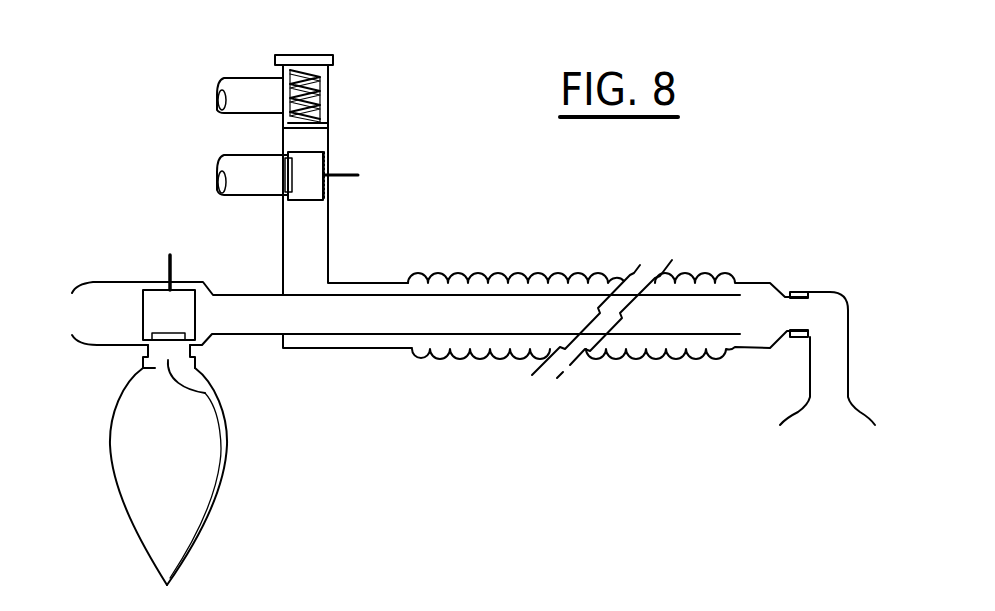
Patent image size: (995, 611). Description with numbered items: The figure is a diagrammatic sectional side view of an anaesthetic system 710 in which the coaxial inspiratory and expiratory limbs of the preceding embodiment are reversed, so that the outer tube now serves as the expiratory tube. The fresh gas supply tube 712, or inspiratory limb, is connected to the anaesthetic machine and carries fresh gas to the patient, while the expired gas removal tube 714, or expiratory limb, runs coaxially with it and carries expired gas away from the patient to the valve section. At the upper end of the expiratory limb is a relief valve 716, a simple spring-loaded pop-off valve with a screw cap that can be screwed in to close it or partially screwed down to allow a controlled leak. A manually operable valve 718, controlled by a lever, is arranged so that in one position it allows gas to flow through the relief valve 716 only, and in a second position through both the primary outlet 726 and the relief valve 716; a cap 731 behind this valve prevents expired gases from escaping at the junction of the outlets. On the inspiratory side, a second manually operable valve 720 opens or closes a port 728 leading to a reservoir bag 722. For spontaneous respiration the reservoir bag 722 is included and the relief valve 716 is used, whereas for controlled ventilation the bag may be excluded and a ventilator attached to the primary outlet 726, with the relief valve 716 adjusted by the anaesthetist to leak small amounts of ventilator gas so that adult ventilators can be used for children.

The anaesthetic system 710 is at (513, 403).
The fresh gas supply tube 712 is at (500, 307).
The expired gas removal tube 714 is at (442, 358).
The relief valve 716 is at (328, 92).
The manually operable valve 718 is at (328, 167).
The second manually operable valve 720 is at (145, 348).
The reservoir bag 722 is at (208, 467).
The primary outlet 726 is at (218, 178).
The port 728 is at (205, 391).
The cap 731 is at (333, 202).